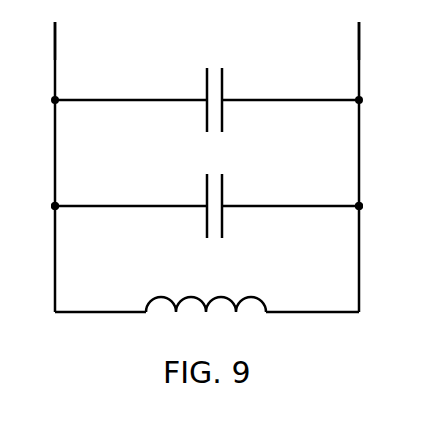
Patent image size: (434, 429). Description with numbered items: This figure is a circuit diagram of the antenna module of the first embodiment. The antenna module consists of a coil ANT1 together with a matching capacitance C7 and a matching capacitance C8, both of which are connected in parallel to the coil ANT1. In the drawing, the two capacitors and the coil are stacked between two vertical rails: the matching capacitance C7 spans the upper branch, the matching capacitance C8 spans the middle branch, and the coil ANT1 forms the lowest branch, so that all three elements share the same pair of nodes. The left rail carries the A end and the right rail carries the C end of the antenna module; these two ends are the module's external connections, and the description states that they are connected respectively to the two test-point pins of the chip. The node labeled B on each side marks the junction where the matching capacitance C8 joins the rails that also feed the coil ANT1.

The matching capacitance C7 is at (207, 92).
The matching capacitance C8 is at (207, 199).
The coil ANT1 is at (206, 281).
The A end A is at (39, 34).
The B end B is at (206, 219).
The C end C is at (375, 34).